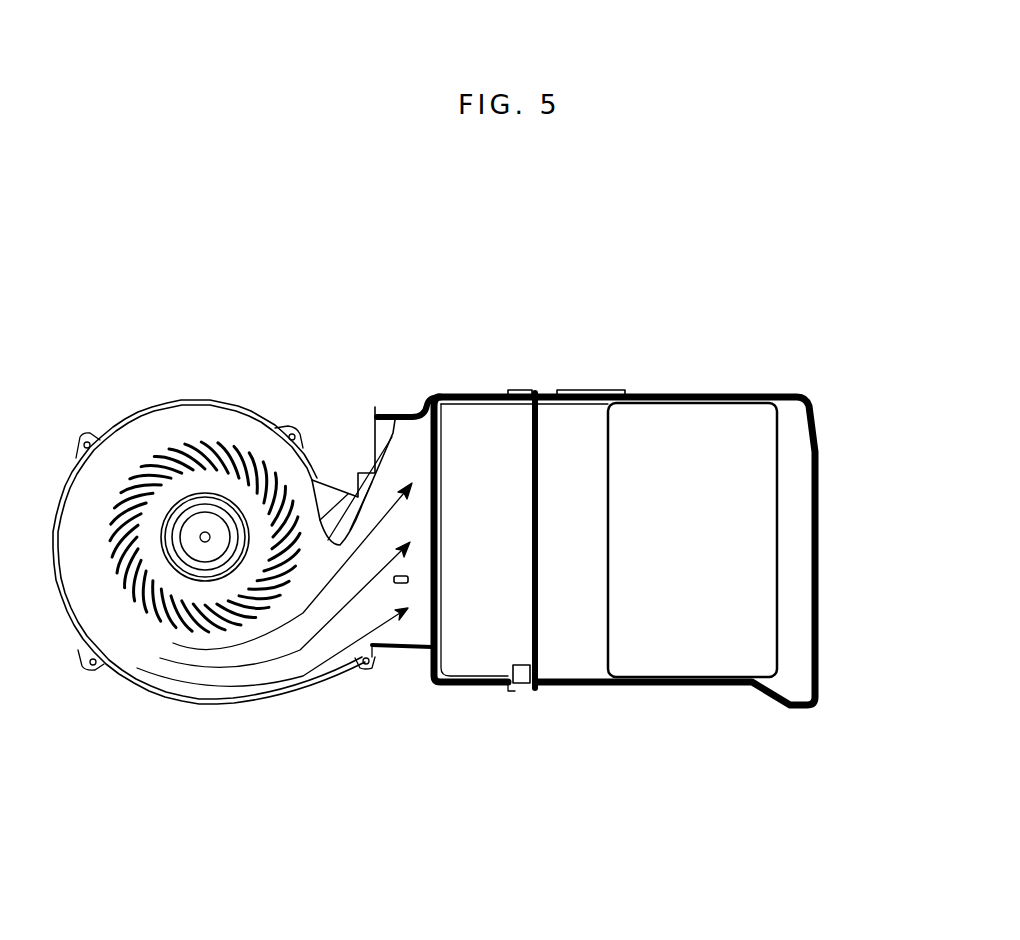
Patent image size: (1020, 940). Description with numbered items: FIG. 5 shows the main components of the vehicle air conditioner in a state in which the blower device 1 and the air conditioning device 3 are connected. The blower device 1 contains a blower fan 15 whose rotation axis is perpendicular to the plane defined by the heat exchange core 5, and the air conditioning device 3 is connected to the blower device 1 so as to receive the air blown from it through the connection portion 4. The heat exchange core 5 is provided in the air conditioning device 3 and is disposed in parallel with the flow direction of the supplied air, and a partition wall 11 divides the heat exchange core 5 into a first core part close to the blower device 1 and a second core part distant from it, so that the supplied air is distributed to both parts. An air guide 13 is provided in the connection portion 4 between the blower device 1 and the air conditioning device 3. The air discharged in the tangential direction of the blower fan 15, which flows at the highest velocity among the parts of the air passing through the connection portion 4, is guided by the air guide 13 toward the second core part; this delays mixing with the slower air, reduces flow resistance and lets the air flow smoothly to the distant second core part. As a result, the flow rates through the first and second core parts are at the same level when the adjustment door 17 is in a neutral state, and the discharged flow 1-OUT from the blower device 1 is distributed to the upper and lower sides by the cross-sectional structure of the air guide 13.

The blower device 1 is at (388, 358).
The air conditioning device 3 is at (820, 358).
The connection portion 4 is at (399, 397).
The heat exchange core 5 is at (777, 552).
The partition wall 11 is at (573, 663).
The air guide 13 is at (392, 580).
The blower fan 15 is at (150, 607).
The adjustment door 17 is at (452, 662).
The blower outlet air flow 1-OUT is at (345, 607).